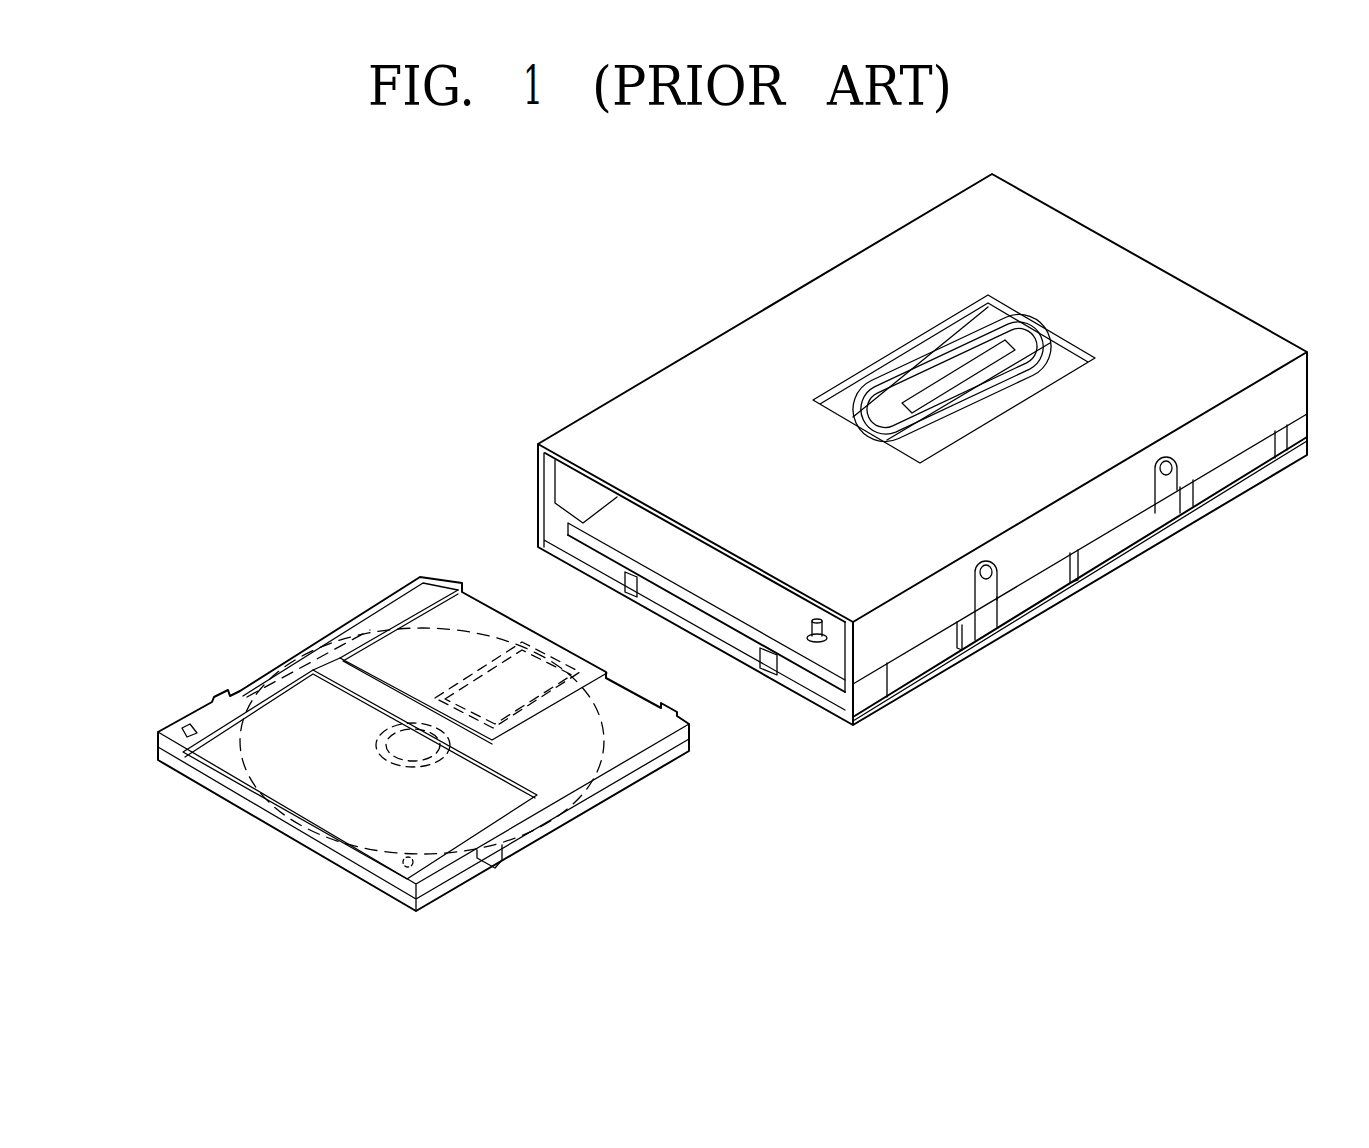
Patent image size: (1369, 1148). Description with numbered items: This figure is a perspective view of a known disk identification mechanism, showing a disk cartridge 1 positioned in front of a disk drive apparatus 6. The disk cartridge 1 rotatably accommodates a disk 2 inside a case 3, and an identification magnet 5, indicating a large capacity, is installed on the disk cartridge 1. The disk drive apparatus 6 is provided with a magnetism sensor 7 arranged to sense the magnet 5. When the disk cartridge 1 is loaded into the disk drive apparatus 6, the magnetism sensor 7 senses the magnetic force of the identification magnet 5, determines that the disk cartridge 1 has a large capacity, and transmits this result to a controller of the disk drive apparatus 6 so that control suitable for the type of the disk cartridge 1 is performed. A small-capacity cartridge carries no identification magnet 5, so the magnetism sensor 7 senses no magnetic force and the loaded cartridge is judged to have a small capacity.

The disk cartridge 1 is at (255, 670).
The disk 2 is at (350, 638).
The case 3 is at (398, 603).
The identification magnet 5 is at (403, 866).
The disk drive apparatus 6 is at (779, 262).
The magnetism sensor 7 is at (808, 645).